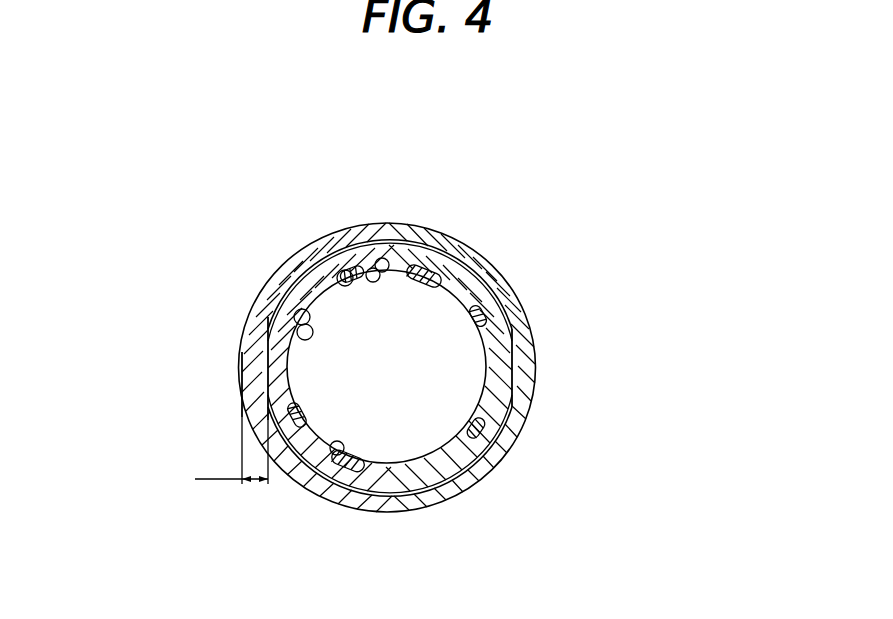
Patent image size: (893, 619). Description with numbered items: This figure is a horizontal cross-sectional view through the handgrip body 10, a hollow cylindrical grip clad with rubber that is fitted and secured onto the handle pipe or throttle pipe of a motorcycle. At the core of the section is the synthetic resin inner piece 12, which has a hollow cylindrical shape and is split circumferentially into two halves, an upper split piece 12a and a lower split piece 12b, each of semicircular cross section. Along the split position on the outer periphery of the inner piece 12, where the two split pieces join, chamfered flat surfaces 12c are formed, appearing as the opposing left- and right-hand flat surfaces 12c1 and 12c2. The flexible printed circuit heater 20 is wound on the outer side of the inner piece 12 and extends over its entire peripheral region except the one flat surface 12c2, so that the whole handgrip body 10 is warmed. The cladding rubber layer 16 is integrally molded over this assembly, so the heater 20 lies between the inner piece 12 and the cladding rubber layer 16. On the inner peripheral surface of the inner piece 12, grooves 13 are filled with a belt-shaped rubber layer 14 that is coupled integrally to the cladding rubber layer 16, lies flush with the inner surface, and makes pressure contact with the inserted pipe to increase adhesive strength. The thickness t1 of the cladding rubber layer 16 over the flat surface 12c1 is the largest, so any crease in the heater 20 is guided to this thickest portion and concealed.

The handgrip body 10 is at (527, 237).
The inner piece 12 is at (739, 275).
The upper split piece 12a is at (503, 290).
The lower split piece 12b is at (488, 434).
The chamfered flat surfaces 12c is at (389, 368).
The flat surface 12c1 is at (268, 350).
The flat surface 12c2 is at (514, 355).
The grooves 13 is at (338, 272).
The belt-shaped rubber layer 14 is at (383, 274).
The cladding rubber layer 16 is at (494, 468).
The flexible printed circuit heater 20 is at (418, 258).
The thickness of the cladding rubber layer t1 is at (231, 450).